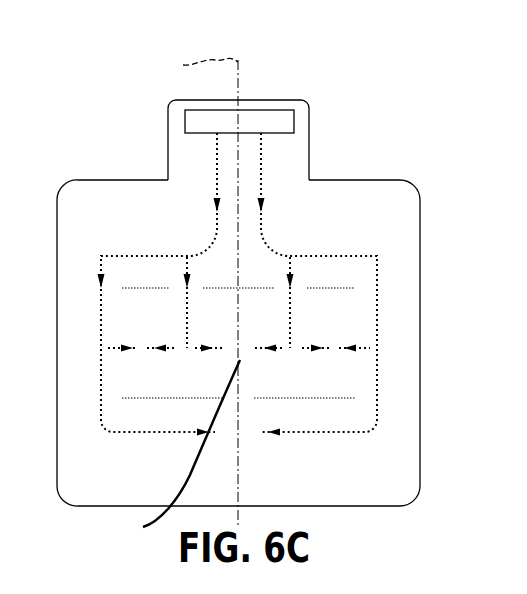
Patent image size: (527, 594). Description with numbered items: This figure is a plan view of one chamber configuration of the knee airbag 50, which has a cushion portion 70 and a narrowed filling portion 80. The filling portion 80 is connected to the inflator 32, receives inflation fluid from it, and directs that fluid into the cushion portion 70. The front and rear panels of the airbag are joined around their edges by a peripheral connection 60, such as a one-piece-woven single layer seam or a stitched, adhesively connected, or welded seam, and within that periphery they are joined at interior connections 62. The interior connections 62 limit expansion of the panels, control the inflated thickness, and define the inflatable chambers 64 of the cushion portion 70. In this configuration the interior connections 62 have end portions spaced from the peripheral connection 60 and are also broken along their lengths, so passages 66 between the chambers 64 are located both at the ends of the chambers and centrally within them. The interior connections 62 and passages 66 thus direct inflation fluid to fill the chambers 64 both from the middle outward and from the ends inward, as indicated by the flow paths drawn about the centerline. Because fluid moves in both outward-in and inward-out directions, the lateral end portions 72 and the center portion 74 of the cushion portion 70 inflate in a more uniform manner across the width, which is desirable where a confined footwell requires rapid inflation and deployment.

The knee airbag 50 is at (86, 115).
The inflator 32 is at (242, 93).
The filling portion 80 is at (185, 155).
The cushion portion 70 is at (387, 222).
The peripheral connection 60 is at (423, 365).
The interior connections 62 is at (155, 288).
The passages 66 is at (82, 290).
The inflatable chambers 64 is at (123, 240).
The lateral end portions 72 is at (72, 298).
The center portion 74 is at (176, 449).